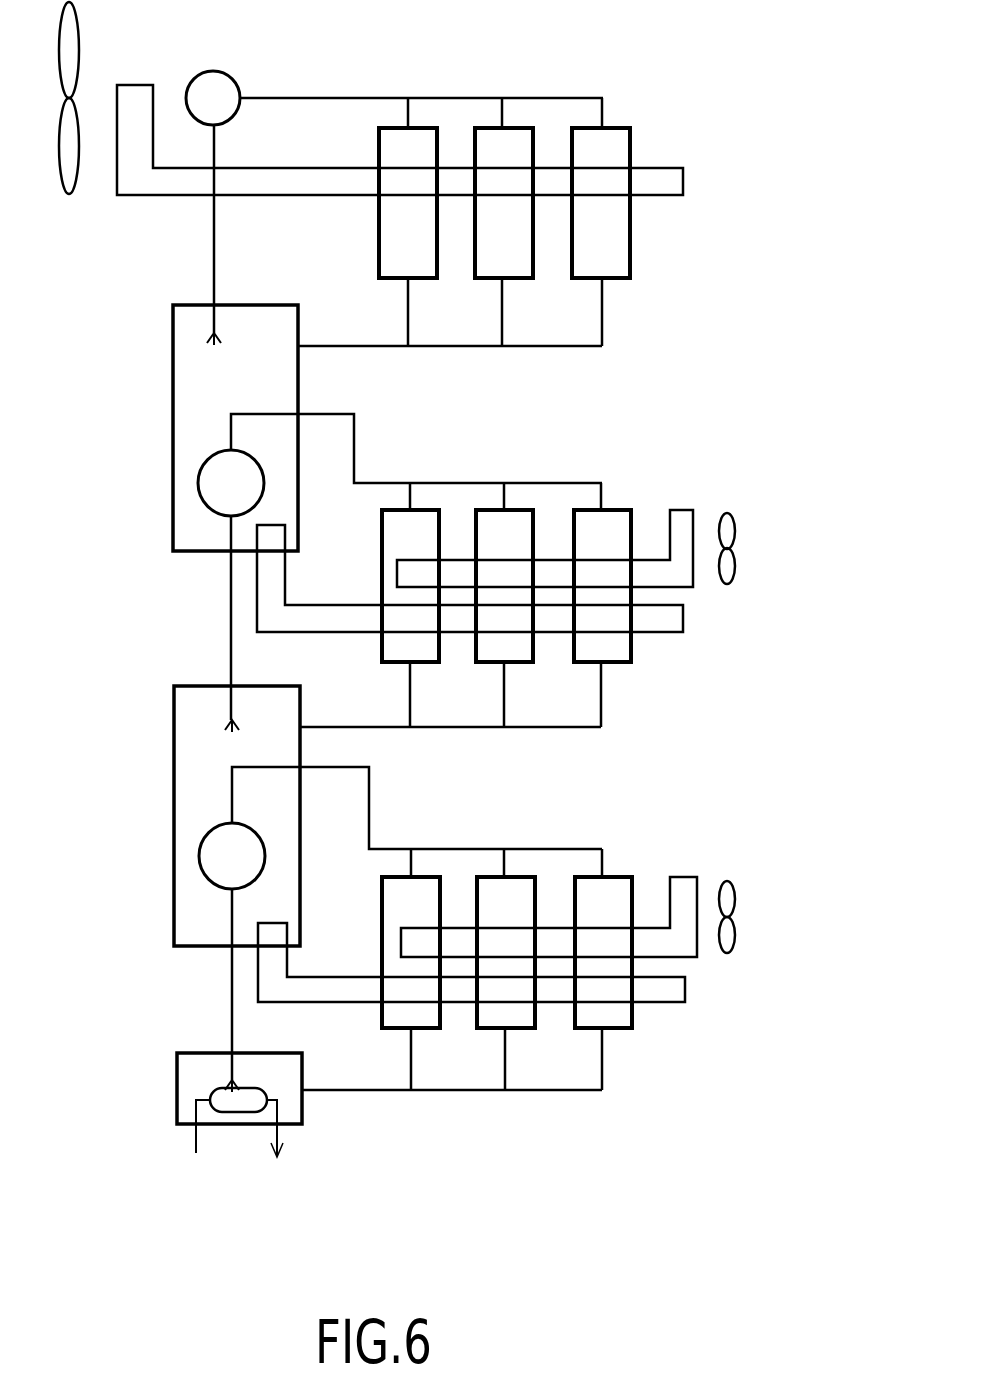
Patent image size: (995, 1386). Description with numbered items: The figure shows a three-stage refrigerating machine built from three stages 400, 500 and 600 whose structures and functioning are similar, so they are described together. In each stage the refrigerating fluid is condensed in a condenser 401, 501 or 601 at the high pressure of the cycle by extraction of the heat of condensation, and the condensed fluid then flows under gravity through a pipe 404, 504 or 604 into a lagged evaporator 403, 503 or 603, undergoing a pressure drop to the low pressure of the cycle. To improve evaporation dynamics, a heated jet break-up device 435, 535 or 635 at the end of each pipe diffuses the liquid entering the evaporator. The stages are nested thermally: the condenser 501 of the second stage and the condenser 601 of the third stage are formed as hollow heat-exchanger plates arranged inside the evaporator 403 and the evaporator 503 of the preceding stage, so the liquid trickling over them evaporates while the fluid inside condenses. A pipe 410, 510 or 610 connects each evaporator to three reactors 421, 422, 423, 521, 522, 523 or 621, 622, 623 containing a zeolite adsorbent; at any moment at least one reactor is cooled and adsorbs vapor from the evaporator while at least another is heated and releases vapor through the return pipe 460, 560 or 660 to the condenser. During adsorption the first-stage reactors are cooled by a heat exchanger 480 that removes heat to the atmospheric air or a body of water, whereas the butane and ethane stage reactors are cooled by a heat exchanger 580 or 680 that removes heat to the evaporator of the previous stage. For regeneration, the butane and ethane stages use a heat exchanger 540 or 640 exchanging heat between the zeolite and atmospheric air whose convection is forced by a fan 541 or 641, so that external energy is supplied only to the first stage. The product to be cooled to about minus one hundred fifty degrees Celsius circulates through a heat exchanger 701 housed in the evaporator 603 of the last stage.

The first stage 400 is at (664, 118).
The condenser 401 is at (213, 71).
The evaporator 403 is at (173, 405).
The pipe 404 is at (215, 250).
The pipe 410 is at (338, 345).
The reactor 421 is at (378, 140).
The reactor 422 is at (473, 140).
The reactor 423 is at (570, 140).
The jet break-up device 435 is at (212, 338).
The pipe 460 is at (323, 97).
The heat exchanger 480 is at (145, 200).
The second stage 500 is at (752, 496).
The condenser 501 is at (197, 483).
The evaporator 503 is at (174, 785).
The pipe 504 is at (228, 575).
The pipe 510 is at (340, 726).
The reactor 521 is at (441, 522).
The reactor 522 is at (535, 522).
The reactor 523 is at (633, 522).
The jet break-up device 535 is at (228, 722).
The heat exchanger 540 is at (688, 503).
The fan 541 is at (735, 566).
The pipe 560 is at (355, 435).
The heat exchanger 580 is at (330, 598).
The third stage 600 is at (692, 850).
The condenser 601 is at (198, 856).
The evaporator 603 is at (177, 1090).
The pipe 604 is at (228, 965).
The pipe 610 is at (345, 1092).
The reactor 621 is at (441, 890).
The reactor 622 is at (537, 890).
The reactor 623 is at (634, 890).
The jet break-up device 635 is at (225, 1078).
The heat exchanger 640 is at (698, 961).
The fan 641 is at (735, 940).
The pipe 660 is at (372, 800).
The heat exchanger 680 is at (332, 970).
The heat exchanger 701 is at (238, 1113).